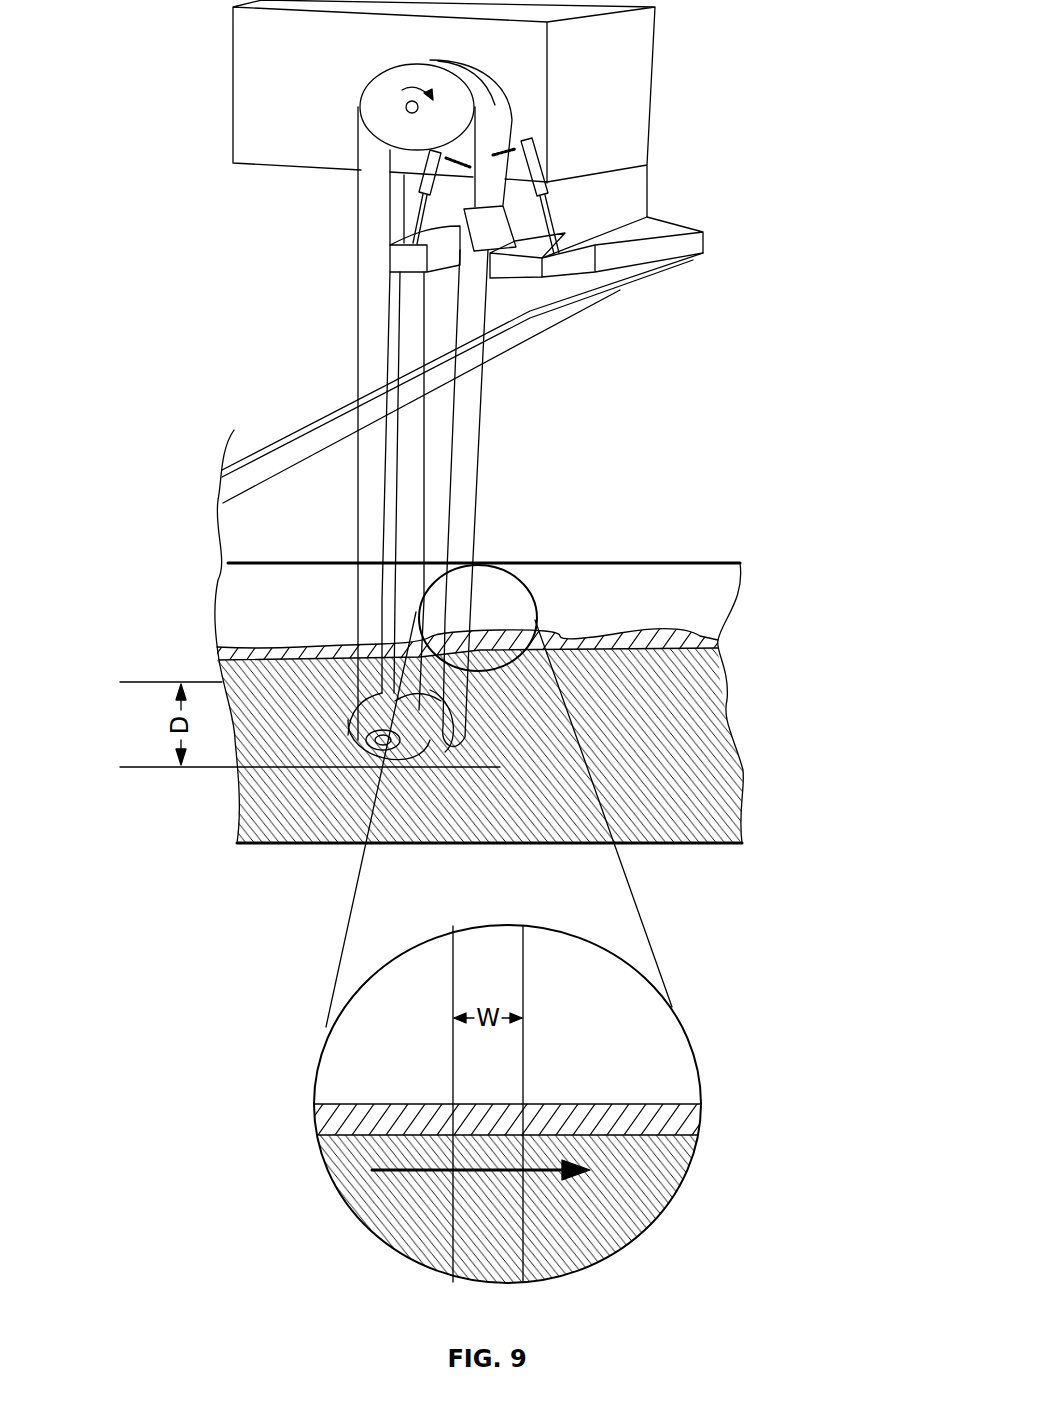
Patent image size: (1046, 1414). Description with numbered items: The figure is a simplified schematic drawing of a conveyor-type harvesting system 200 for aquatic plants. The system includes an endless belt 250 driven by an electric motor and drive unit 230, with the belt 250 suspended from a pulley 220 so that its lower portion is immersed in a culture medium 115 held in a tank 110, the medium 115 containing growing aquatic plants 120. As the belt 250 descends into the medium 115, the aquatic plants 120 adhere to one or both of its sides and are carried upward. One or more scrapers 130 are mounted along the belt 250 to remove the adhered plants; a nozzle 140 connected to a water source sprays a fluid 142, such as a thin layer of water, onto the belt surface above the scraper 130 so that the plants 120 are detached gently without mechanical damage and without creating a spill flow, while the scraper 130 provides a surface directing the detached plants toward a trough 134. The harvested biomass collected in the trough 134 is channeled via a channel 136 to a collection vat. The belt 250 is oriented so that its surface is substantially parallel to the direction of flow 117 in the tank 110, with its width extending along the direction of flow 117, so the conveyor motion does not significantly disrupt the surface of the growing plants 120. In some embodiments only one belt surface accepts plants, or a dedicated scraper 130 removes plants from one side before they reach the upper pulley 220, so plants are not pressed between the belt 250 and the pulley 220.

The harvesting system 200 is at (228, 230).
The electric motor and drive unit 230 is at (245, 75).
The pulley 220 is at (368, 79).
The endless belt 250 is at (358, 350).
The nozzle 140 is at (542, 152).
The fluid 142 is at (507, 134).
The scraper 130 is at (515, 222).
The trough 134 is at (388, 258).
The channel 136 is at (305, 432).
The tank 110 is at (672, 562).
The aquatic plants 120 is at (735, 641).
The culture medium 115 is at (628, 770).
The direction of flow 117 is at (425, 1170).